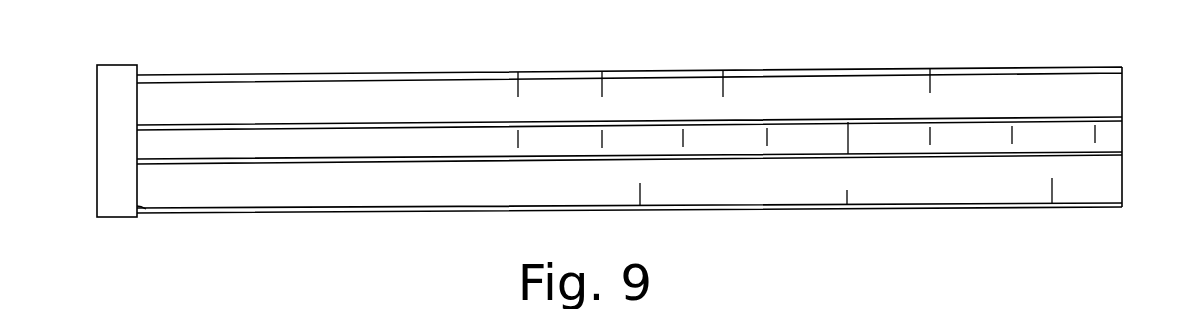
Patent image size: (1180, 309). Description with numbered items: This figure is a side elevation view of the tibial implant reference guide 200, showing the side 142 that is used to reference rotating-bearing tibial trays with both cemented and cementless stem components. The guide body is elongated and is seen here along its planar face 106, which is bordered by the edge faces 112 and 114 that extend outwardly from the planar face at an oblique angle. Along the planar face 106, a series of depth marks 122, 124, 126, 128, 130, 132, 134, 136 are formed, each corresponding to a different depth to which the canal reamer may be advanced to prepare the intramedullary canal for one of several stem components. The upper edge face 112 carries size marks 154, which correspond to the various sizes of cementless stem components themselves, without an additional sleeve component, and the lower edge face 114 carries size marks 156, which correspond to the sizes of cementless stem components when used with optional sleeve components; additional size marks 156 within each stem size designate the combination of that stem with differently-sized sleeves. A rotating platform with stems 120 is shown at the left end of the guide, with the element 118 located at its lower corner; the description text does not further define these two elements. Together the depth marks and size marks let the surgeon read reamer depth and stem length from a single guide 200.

The tibial implant reference guide 200 is at (1065, 53).
The rotating platform with stems 120 is at (112, 72).
The platform base 118 is at (140, 206).
The edge face 112 is at (411, 97).
The planar face 106 is at (360, 140).
The side 142 is at (445, 90).
The edge face 114 is at (373, 190).
The size marks 154 is at (519, 79).
The size marks 156 is at (643, 207).
The depth mark 122 is at (518, 148).
The depth mark 124 is at (602, 148).
The depth mark 126 is at (683, 147).
The depth mark 128 is at (767, 146).
The depth mark 130 is at (848, 147).
The depth mark 132 is at (930, 145).
The depth mark 134 is at (1012, 144).
The depth mark 136 is at (1095, 143).